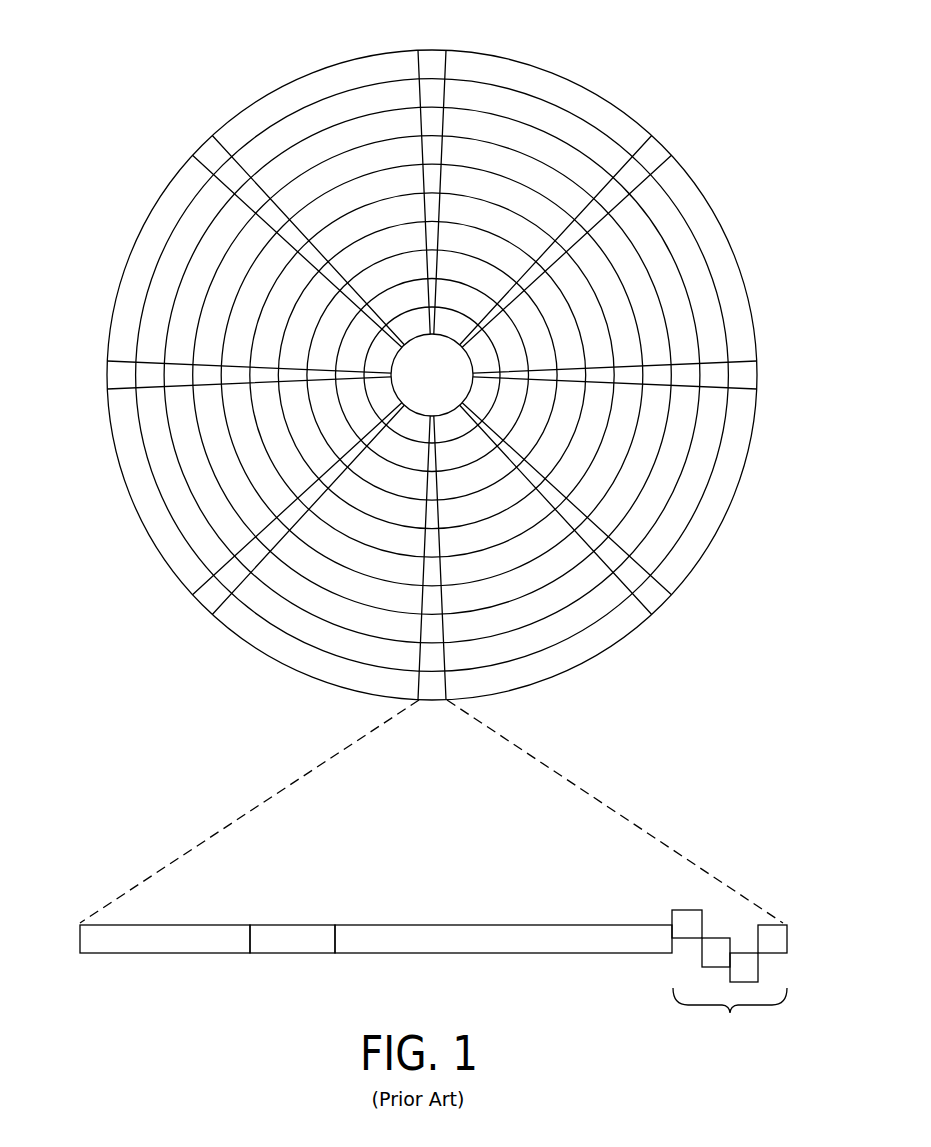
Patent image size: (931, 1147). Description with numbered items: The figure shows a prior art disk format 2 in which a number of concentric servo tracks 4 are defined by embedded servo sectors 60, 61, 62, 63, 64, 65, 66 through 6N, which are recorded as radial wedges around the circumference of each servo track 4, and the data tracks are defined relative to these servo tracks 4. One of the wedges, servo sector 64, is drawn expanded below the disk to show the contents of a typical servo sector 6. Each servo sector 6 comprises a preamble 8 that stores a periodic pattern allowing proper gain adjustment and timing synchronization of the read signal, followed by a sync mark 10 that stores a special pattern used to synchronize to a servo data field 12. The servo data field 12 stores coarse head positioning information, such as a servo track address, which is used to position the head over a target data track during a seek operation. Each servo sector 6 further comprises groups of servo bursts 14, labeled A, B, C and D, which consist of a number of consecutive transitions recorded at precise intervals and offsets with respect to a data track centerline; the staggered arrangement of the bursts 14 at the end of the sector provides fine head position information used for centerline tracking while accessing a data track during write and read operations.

The disk format 2 is at (195, 56).
The servo tracks 4 is at (548, 115).
The servo sector 6 is at (431, 386).
The servo sector 6_0 60 is at (434, 62).
The servo sector 6_1 61 is at (653, 152).
The servo sector 6_2 62 is at (750, 376).
The servo sector 6_3 63 is at (655, 600).
The servo sector 6_4 64 is at (291, 773).
The servo sector 6_5 65 is at (208, 600).
The servo sector 6_6 66 is at (112, 375).
The servo sector 6_N 6N is at (212, 152).
The preamble 8 is at (145, 953).
The sync mark 10 is at (290, 953).
The servo data field 12 is at (493, 953).
The servo bursts 14 is at (662, 894).